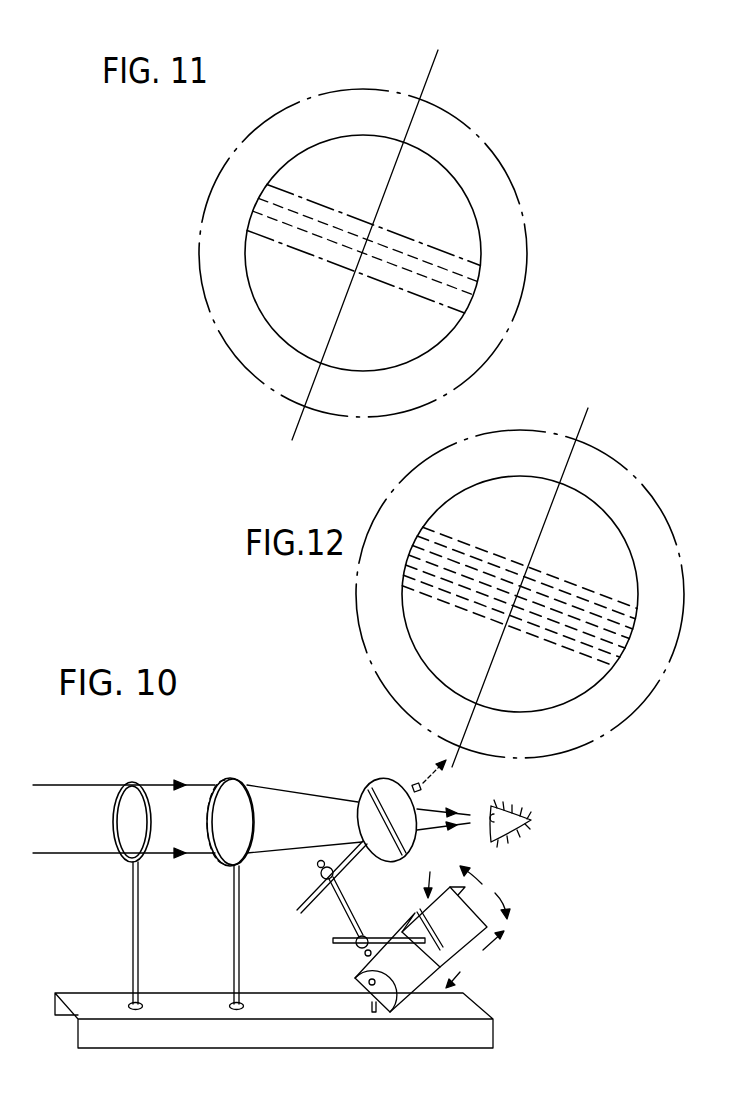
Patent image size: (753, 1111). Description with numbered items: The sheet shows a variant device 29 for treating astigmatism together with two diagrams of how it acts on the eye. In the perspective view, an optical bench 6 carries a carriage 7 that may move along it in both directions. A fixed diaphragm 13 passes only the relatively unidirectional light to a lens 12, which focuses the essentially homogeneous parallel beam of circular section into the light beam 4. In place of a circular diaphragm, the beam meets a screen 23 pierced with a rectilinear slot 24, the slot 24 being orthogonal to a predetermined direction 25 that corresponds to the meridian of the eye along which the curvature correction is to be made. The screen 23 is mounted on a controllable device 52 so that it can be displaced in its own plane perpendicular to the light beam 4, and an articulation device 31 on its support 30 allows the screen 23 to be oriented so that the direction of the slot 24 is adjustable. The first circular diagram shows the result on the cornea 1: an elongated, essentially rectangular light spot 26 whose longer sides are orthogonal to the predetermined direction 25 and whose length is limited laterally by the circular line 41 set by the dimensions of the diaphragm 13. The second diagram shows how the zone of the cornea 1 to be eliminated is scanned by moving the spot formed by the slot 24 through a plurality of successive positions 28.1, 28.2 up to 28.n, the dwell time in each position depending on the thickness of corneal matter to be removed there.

In FIG. 11, the cornea 1 is at (450, 188).
In FIG. 12, the cornea 1 is at (612, 530).
In FIG. 10, the light beam 4 is at (102, 785).
In FIG. 10, the optical bench 6 is at (335, 1040).
In FIG. 10, the carriage 7 is at (443, 958).
In FIG. 10, the lens 12 is at (243, 782).
In FIG. 10, the fixed diaphragm 13 is at (135, 782).
In FIG. 10, the screen 23 is at (383, 783).
In FIG. 10, the rectilinear slot 24 is at (397, 848).
In FIG. 11, the predetermined direction 25 is at (453, 69).
In FIG. 12, the predetermined direction 25 is at (580, 433).
In FIG. 10, the predetermined direction 25 is at (422, 790).
In FIG. 11, the elongated light spot 26 is at (443, 278).
In FIG. 12, the first position of light spot 28.1 is at (553, 640).
In FIG. 12, the second position of light spot 28.2 is at (580, 640).
In FIG. 12, the nth position of light spot 28.n is at (597, 597).
In FIG. 10, the variant device 29 is at (206, 765).
In FIG. 10, the support 30 is at (400, 982).
In FIG. 10, the articulation device 31 is at (357, 978).
In FIG. 11, the circular line 41 is at (442, 342).
In FIG. 12, the circular line 41 is at (638, 597).
In FIG. 10, the controllable device 52 is at (403, 914).